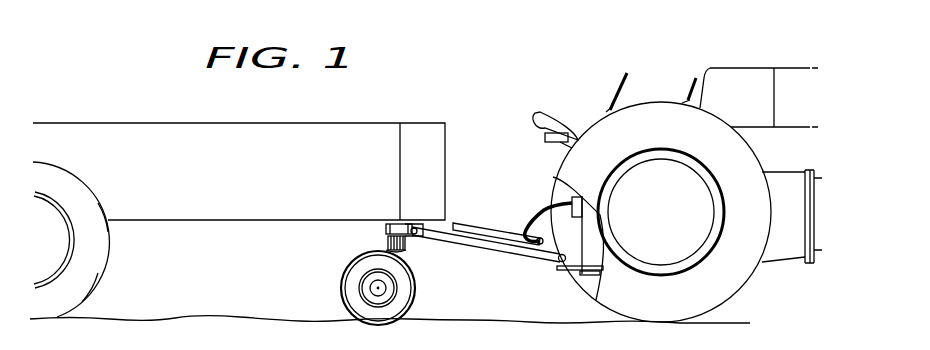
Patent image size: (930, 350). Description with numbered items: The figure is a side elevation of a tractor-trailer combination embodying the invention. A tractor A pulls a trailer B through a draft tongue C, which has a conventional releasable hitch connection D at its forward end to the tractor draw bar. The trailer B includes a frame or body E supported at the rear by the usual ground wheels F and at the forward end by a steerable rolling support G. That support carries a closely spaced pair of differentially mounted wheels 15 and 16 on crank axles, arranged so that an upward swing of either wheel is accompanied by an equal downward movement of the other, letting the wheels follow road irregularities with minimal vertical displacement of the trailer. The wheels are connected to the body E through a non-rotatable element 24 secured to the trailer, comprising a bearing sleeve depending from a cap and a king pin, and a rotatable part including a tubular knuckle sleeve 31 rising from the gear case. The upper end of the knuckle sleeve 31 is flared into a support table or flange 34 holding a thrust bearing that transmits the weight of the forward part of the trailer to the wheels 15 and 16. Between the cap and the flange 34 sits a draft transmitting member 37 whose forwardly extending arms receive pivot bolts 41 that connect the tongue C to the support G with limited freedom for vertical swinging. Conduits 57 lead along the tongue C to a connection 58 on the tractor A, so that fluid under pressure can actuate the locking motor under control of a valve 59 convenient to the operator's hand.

The differentially mounted wheel 15 is at (406, 297).
The differentially mounted wheel 16 is at (344, 262).
The non-rotatable element 24 is at (372, 222).
The knuckle sleeve 31 is at (405, 247).
The support table or flange 34 is at (387, 241).
The draft transmitting member 37 is at (385, 233).
The pivot bolt 41 is at (414, 226).
The conduit 57 is at (475, 229).
The connection 58 is at (552, 198).
The valve 59 is at (690, 90).
The tractor A is at (764, 52).
The trailer B is at (292, 122).
The draft tongue C is at (502, 248).
The releasable hitch connection D is at (560, 262).
The frame or body E is at (397, 125).
The ground wheels F is at (111, 255).
The steerable rolling support G is at (372, 288).